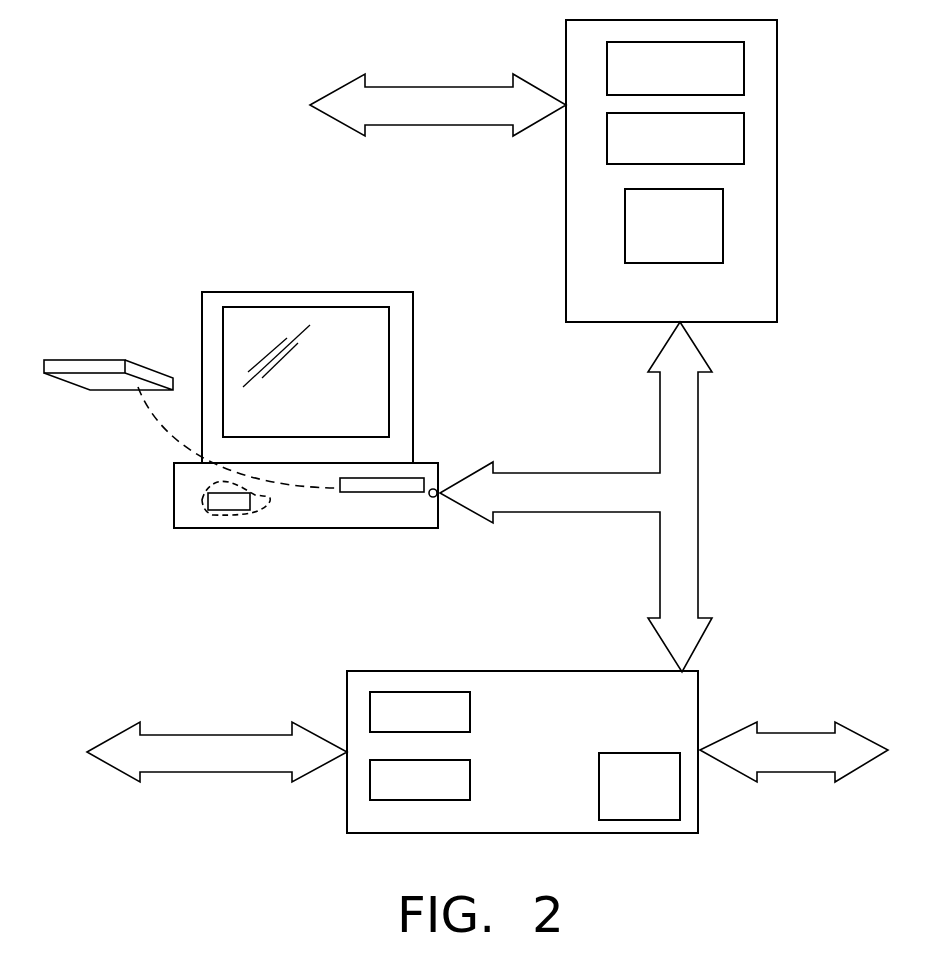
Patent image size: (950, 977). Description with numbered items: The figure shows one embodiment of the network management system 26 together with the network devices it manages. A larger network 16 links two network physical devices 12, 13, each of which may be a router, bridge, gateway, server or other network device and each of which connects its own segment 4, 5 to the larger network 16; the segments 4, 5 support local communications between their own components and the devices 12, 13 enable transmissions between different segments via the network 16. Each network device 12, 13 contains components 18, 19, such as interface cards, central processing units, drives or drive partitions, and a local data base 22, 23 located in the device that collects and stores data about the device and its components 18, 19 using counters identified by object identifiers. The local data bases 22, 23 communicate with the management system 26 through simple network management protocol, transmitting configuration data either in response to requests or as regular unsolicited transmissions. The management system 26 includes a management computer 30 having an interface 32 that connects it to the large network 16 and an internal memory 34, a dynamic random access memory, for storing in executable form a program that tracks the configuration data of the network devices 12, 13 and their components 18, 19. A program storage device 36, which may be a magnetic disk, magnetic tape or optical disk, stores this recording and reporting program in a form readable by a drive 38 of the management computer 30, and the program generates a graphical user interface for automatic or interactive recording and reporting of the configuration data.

The segment 4 is at (446, 117).
The segment 5 is at (222, 765).
The network physical device 12 is at (661, 303).
The network physical device 13 is at (518, 740).
The larger network 16 is at (655, 516).
The component 18 is at (661, 81).
The component 19 is at (404, 723).
The local data base 22 is at (661, 237).
The local data base 23 is at (623, 800).
The network management system 26 is at (385, 276).
The management computer 30 is at (432, 463).
The interface 32 is at (440, 497).
The internal memory 34 is at (208, 500).
The program storage device 36 is at (130, 360).
The drive 38 is at (377, 491).